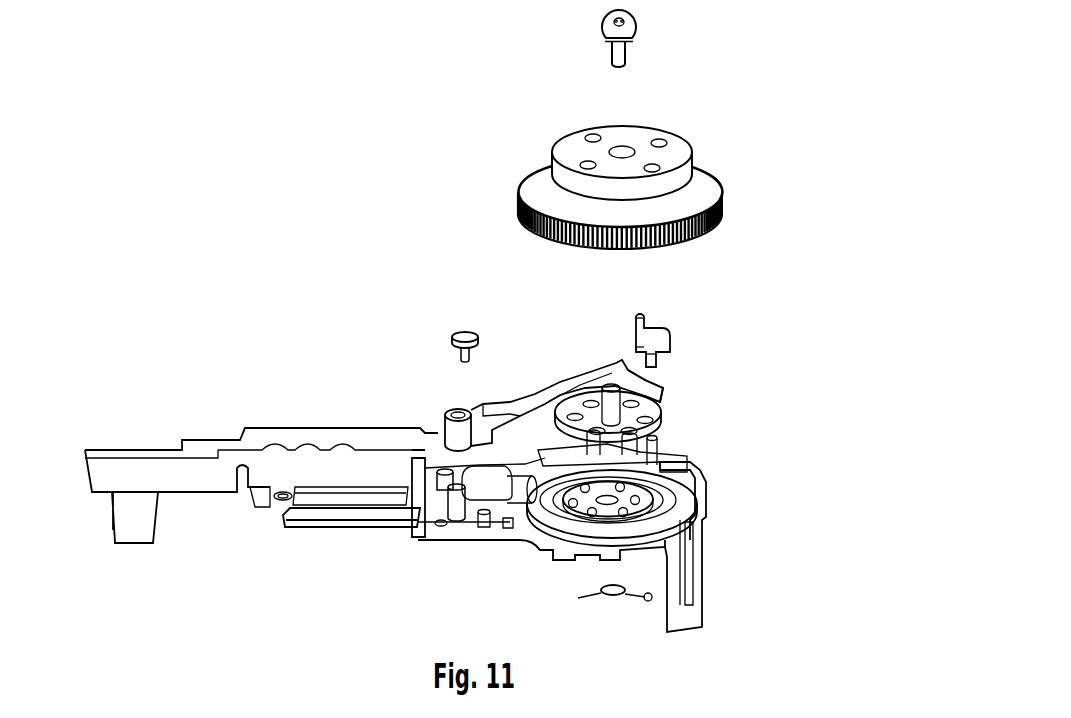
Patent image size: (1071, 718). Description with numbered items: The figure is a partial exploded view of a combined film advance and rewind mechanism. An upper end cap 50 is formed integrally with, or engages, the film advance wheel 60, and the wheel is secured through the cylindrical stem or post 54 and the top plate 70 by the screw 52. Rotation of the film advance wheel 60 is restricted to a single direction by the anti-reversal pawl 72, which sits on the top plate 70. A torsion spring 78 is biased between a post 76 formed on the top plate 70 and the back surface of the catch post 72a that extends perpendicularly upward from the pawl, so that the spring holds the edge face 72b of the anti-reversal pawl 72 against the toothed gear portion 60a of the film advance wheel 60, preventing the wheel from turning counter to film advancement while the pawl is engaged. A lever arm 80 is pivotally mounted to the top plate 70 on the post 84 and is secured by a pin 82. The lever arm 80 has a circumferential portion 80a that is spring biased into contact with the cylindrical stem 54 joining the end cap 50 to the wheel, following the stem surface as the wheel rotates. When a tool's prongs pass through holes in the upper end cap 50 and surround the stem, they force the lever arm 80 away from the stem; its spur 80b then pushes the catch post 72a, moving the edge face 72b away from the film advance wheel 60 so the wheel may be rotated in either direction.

The upper end cap 50 is at (673, 138).
The screw 52 is at (636, 33).
The cylindrical stem 54 is at (553, 162).
The film advance wheel 60 is at (625, 194).
The toothed gear portion 60a is at (722, 192).
The top plate 70 is at (200, 440).
The anti-reversal pawl 72 is at (658, 331).
The catch post 72a is at (636, 325).
The edge face 72b is at (660, 358).
The post 76 is at (655, 450).
The torsion spring 78 is at (626, 594).
The lever arm 80 is at (579, 399).
The circumferential portion 80a is at (648, 382).
The spur 80b is at (612, 372).
The pin 82 is at (452, 333).
The post 84 is at (460, 535).